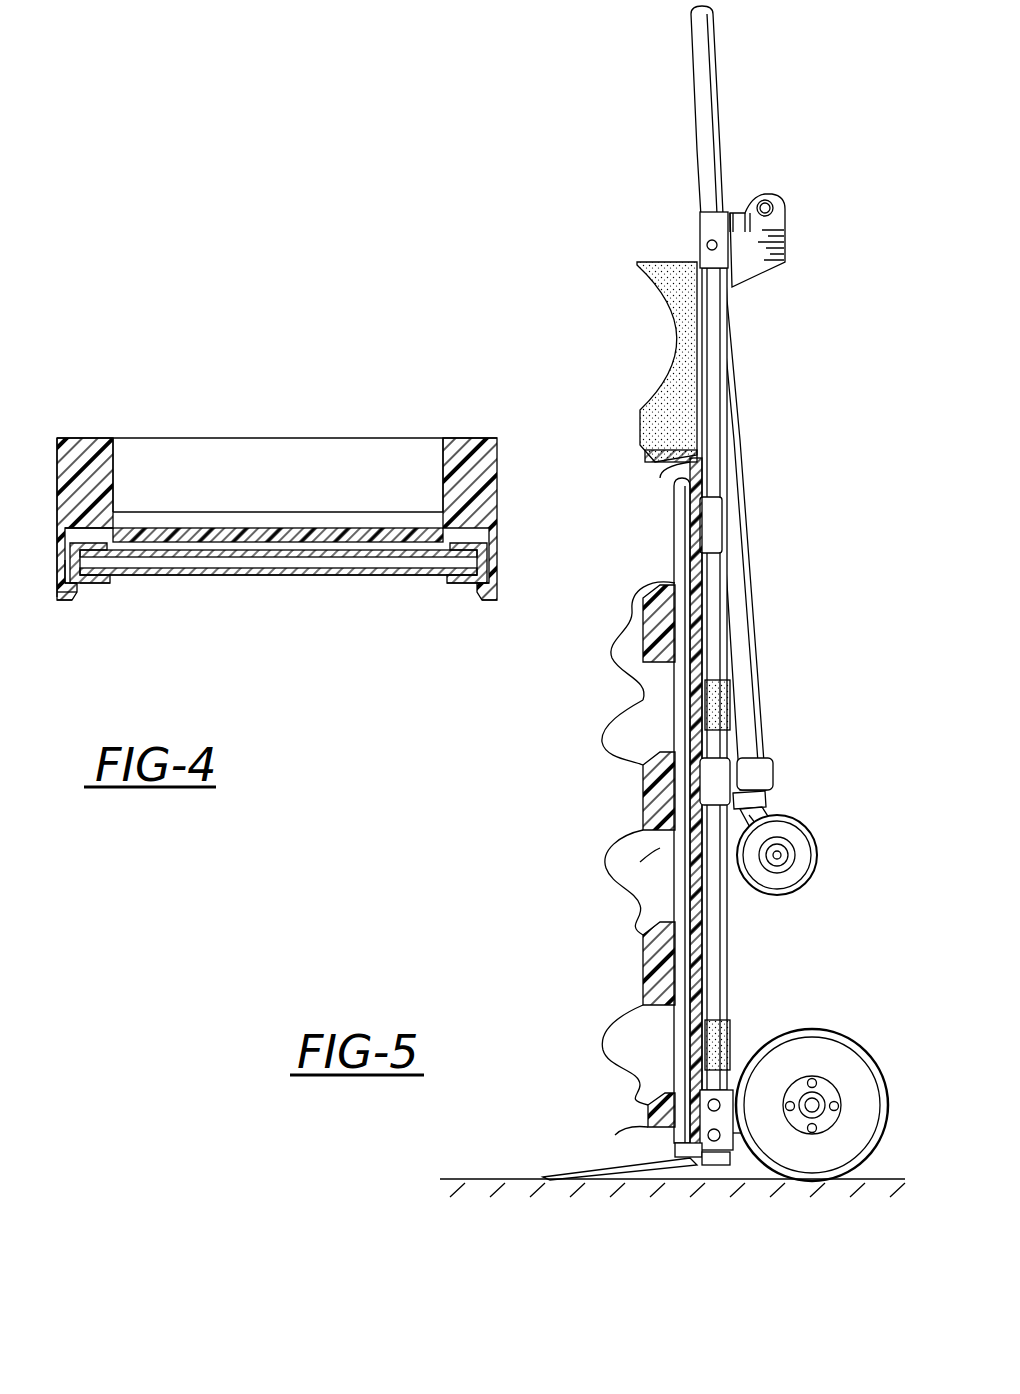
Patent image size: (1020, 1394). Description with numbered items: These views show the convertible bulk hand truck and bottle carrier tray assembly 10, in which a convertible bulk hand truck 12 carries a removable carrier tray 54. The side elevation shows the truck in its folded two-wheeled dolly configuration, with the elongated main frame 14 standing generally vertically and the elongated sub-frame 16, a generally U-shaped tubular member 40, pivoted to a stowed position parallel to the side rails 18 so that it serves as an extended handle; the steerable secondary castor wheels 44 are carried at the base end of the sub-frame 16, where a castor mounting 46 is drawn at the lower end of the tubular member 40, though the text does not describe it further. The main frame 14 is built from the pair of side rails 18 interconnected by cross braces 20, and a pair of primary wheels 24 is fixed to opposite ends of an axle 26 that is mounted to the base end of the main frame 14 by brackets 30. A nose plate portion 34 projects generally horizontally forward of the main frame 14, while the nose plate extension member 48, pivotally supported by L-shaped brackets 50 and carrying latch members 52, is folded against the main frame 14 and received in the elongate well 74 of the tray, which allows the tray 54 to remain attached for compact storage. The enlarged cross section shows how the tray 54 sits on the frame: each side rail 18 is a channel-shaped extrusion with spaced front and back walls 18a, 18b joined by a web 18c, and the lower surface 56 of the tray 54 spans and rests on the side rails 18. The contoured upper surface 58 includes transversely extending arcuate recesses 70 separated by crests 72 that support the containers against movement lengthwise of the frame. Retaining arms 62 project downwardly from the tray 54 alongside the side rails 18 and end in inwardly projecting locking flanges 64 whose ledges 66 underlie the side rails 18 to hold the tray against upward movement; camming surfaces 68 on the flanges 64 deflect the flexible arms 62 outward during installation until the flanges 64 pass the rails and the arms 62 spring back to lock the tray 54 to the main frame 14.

In FIG. 5, the convertible bulk hand truck and bottle carrier tray assembly 10 is at (614, 198).
In FIG. 5, the convertible bulk hand truck 12 is at (742, 333).
In FIG. 4, the main frame 14 is at (92, 585).
In FIG. 5, the main frame 14 is at (728, 942).
In FIG. 5, the sub-frame 16 is at (742, 482).
In FIG. 4, the side rails 18 is at (90, 500).
In FIG. 5, the side rails 18 is at (722, 640).
In FIG. 4, the front wall 18a is at (82, 528).
In FIG. 4, the back wall 18b is at (90, 567).
In FIG. 4, the web 18c is at (67, 528).
In FIG. 4, the cross braces 20 is at (352, 576).
In FIG. 5, the primary wheels 24 is at (866, 1040).
In FIG. 5, the axle 26 is at (814, 1098).
In FIG. 5, the brackets 30 is at (742, 1135).
In FIG. 5, the nose plate portion 34 is at (560, 1176).
In FIG. 5, the U-shaped tubular member 40 is at (730, 212).
In FIG. 5, the secondary castor wheels 44 is at (815, 833).
In FIG. 5, the caster bracket 46 is at (727, 780).
In FIG. 5, the nose plate extension member 48 is at (640, 862).
In FIG. 5, the L-shaped brackets 50 is at (720, 1165).
In FIG. 5, the latch members 52 is at (668, 1075).
In FIG. 4, the carrier tray 54 is at (143, 502).
In FIG. 5, the carrier tray 54 is at (637, 405).
In FIG. 4, the lower surface 56 is at (290, 557).
In FIG. 4, the upper surface 58 is at (428, 438).
In FIG. 4, the retaining arms 62 is at (62, 600).
In FIG. 5, the retaining arms 62 is at (710, 352).
In FIG. 4, the locking flanges 64 is at (72, 601).
In FIG. 4, the ledges 66 is at (105, 584).
In FIG. 4, the camming surfaces 68 is at (100, 586).
In FIG. 4, the recesses 70 is at (270, 512).
In FIG. 5, the recesses 70 is at (673, 330).
In FIG. 5, the crests 72 is at (637, 263).
In FIG. 4, the well 74 is at (345, 527).